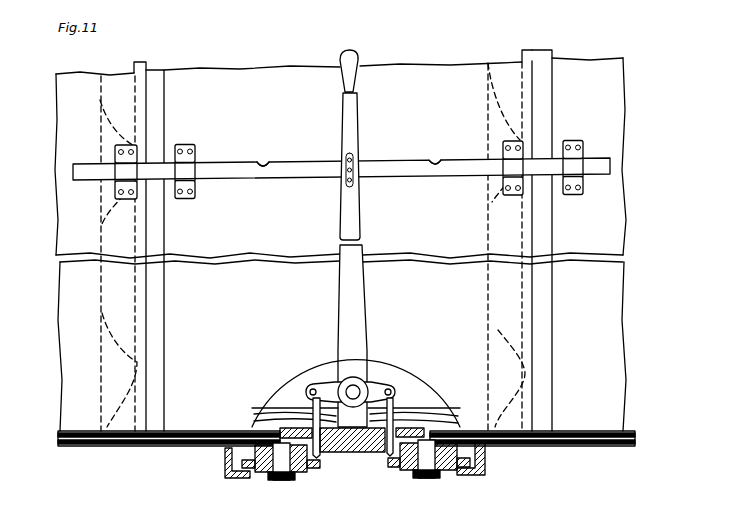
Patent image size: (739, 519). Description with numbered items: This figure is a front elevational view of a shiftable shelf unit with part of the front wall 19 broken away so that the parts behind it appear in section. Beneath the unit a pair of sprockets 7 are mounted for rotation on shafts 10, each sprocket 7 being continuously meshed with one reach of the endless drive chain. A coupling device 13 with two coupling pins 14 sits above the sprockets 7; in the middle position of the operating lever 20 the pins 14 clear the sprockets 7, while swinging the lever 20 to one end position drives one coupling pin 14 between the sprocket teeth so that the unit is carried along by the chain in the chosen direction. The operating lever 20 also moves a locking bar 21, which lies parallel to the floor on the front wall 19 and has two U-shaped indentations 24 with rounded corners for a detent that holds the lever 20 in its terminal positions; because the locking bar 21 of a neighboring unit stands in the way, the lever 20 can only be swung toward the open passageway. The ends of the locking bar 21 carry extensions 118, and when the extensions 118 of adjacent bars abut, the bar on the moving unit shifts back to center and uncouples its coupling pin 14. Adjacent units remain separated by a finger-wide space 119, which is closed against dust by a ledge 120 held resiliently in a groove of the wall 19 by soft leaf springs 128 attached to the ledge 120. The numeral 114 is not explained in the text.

The sprocket 7 is at (301, 462).
The shaft 10 is at (357, 448).
The coupling device 13 is at (376, 388).
The coupling pin 14 is at (312, 400).
The front wall 19 is at (70, 322).
The operating lever 20 is at (358, 217).
The locking bar 21 is at (87, 172).
The U-shaped indentation 24 is at (262, 169).
The base plate 114 is at (590, 437).
The extension 118 is at (157, 170).
The space 119 is at (150, 84).
The ledge 120 is at (140, 66).
The leaf spring 128 is at (503, 118).